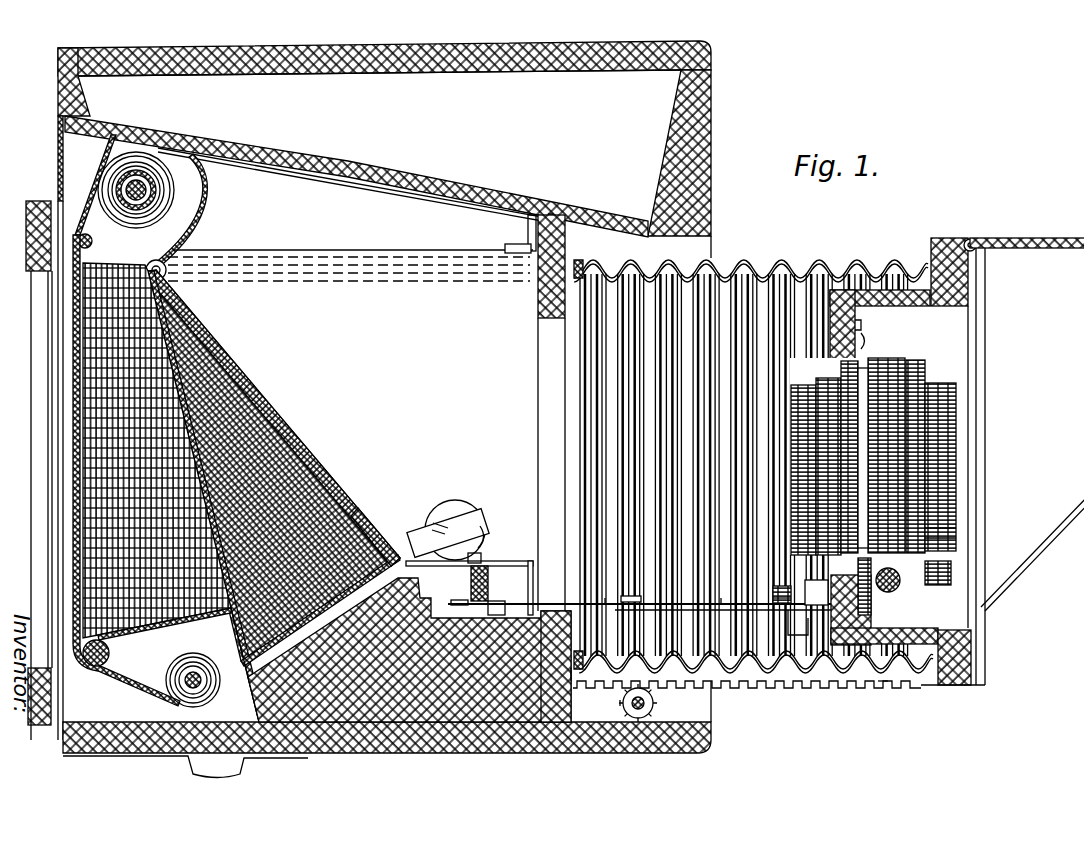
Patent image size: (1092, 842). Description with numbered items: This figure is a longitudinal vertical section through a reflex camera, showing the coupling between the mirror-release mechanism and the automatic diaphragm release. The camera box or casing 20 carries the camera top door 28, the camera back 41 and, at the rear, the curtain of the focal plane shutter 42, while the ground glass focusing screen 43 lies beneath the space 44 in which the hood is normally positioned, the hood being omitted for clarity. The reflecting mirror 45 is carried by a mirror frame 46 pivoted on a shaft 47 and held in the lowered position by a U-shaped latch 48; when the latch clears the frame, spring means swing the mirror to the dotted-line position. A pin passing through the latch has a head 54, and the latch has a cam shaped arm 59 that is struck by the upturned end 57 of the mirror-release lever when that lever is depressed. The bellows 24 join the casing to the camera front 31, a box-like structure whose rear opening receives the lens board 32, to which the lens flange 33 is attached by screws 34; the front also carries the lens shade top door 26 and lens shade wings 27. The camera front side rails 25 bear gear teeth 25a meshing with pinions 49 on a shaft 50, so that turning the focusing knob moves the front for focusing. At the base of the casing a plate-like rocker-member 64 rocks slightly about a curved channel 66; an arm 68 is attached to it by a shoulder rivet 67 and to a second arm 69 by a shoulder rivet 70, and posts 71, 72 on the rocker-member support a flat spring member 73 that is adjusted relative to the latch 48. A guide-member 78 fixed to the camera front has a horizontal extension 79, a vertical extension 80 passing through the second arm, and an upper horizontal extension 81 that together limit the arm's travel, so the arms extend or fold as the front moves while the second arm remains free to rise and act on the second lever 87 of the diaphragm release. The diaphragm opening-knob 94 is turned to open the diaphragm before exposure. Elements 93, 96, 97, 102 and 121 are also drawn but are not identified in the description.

The camera box or casing 20 is at (700, 102).
The bellows 24 is at (755, 255).
The camera front side rails 25 is at (837, 668).
The gear teeth 25a is at (875, 674).
The lens shade top door 26 is at (1003, 231).
The lens shade wings 27 is at (1050, 250).
The camera top door 28 is at (565, 40).
The camera front 31 is at (955, 232).
The lens board 32 is at (848, 609).
The lens flange 33 is at (854, 318).
The screw 34 is at (858, 334).
The camera back 41 is at (27, 307).
The curtain of the focal plane shutter 42 is at (78, 204).
The ground glass focusing screen 43 is at (367, 164).
The hood space 44 is at (488, 68).
The reflecting mirror 45 is at (457, 258).
The mirror frame 46 is at (517, 278).
The shaft 47 is at (140, 257).
The latch 48 is at (396, 514).
The pinions 49 is at (650, 697).
The shaft 50 is at (612, 697).
The head 54 is at (447, 512).
The upturned end 57 is at (480, 540).
The cam shaped arm 59 is at (486, 518).
The rocker-member 64 is at (409, 646).
The curved channel 66 is at (493, 603).
The shoulder rivet 67 is at (452, 590).
The arm 68 is at (597, 590).
The second arm 69 is at (713, 590).
The shoulder rivet 70 is at (625, 590).
The post 71 is at (480, 567).
The post 72 is at (525, 572).
The flat spring member 73 is at (496, 552).
The guide-member 78 is at (694, 675).
The horizontal extension 79 is at (792, 607).
The vertical extension 80 is at (765, 587).
The upper horizontal extension 81 is at (770, 578).
The second lever 87 is at (808, 572).
The ring 93 is at (948, 526).
The diaphragm ring-setting or opening-knob 94 is at (948, 560).
The lens mount 96 is at (933, 375).
The lens barrel 97 is at (793, 443).
The lens 102 is at (917, 352).
The gear 121 is at (893, 560).